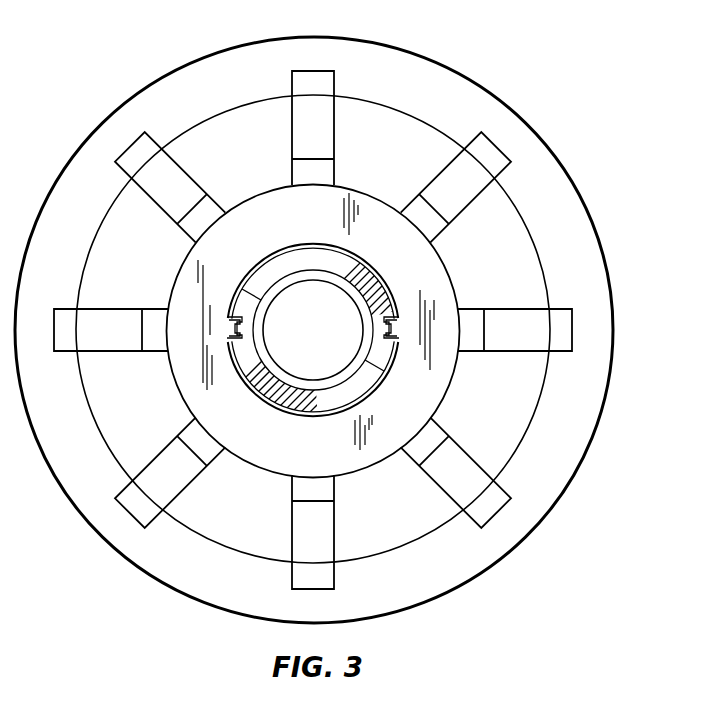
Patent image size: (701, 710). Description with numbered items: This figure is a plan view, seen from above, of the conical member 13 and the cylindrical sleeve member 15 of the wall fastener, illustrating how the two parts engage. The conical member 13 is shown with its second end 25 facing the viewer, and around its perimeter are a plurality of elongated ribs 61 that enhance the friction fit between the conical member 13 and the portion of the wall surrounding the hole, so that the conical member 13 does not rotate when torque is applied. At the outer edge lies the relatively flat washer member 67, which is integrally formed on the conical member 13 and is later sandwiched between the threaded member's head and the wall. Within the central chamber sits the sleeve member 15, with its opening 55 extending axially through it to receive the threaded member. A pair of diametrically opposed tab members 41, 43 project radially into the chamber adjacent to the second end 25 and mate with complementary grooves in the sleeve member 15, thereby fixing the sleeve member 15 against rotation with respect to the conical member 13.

The conical member 13 is at (515, 398).
The cylindrical sleeve member 15 is at (308, 407).
The second end 25 is at (202, 395).
The tab member 41 is at (228, 328).
The tab member 43 is at (399, 328).
The opening 55 is at (328, 345).
The elongated ribs 61 is at (302, 118).
The washer member 67 is at (558, 195).